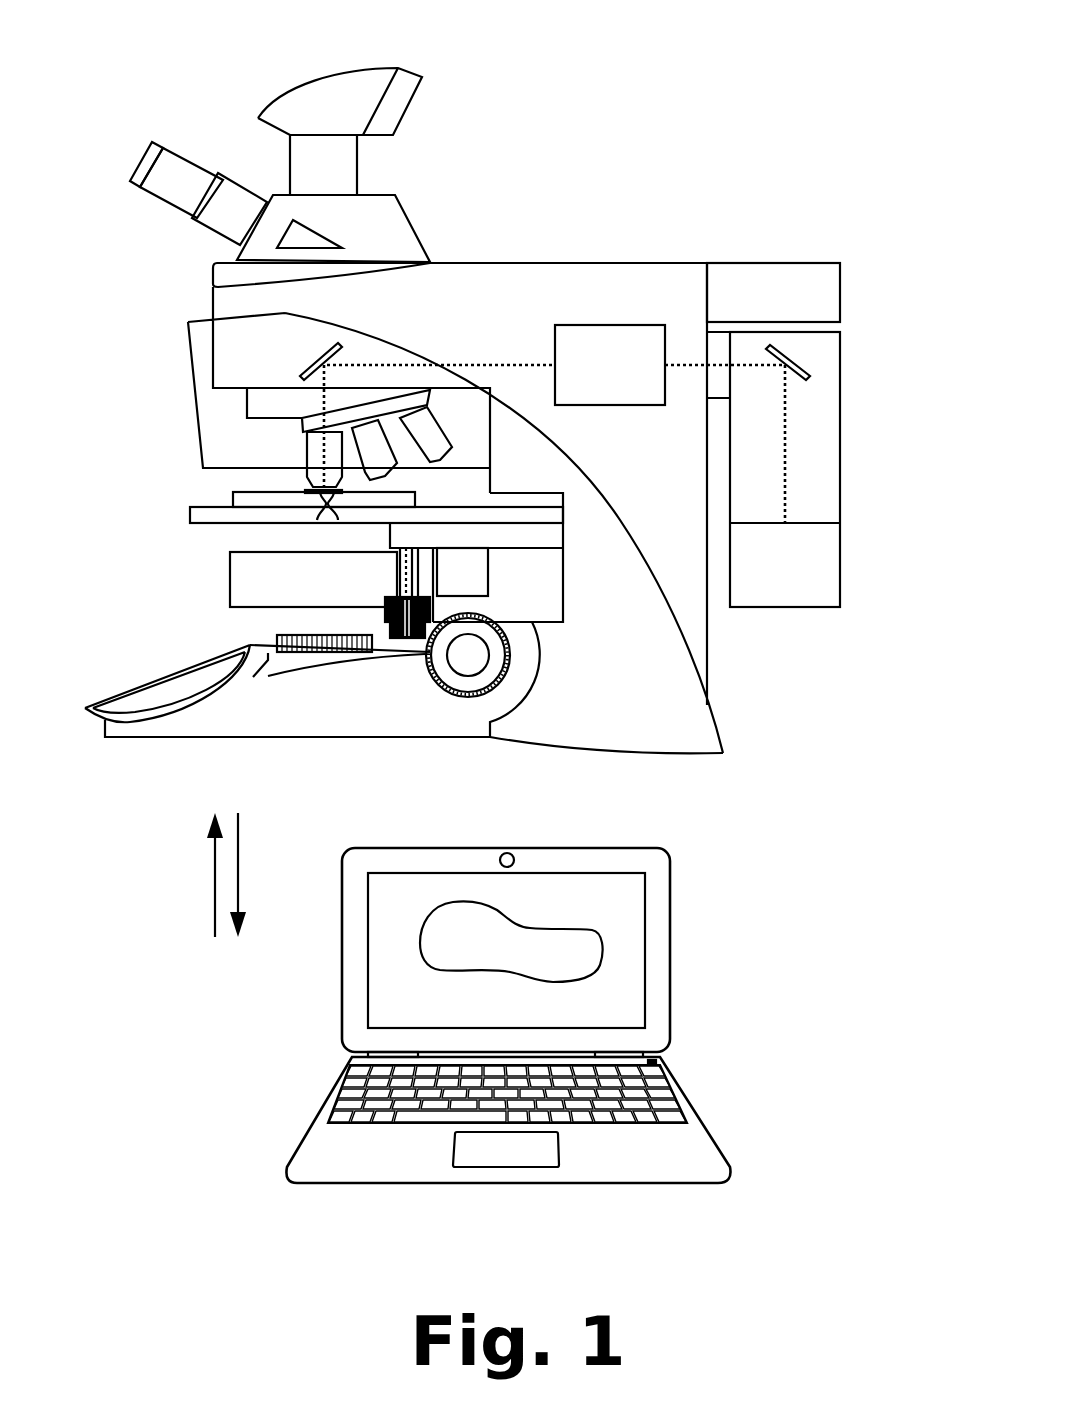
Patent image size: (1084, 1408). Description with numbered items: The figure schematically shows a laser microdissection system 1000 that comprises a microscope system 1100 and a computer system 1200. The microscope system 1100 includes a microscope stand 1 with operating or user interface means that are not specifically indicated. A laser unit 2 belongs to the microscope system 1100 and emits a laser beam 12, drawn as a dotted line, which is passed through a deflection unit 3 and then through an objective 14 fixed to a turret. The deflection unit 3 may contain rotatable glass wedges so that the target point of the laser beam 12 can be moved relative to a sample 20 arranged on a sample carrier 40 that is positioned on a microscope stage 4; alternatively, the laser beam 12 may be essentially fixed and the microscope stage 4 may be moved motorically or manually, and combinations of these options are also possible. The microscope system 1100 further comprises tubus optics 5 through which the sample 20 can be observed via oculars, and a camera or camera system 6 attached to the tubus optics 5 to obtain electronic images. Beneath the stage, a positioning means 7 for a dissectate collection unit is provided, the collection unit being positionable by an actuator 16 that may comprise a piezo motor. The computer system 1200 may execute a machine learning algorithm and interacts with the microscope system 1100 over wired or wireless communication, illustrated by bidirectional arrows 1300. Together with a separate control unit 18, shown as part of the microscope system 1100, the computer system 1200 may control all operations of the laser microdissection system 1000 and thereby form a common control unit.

The laser microdissection system 1000 is at (724, 63).
The microscope system 1100 is at (842, 722).
The microscope stand 1 is at (192, 640).
The camera system 6 is at (328, 72).
The tubus optics 5 is at (428, 205).
The objective 14 is at (307, 458).
The laser beam 12 is at (483, 364).
The deflection unit 3 is at (610, 365).
The control unit 18 is at (773, 292).
The laser unit 2 is at (842, 565).
The microscope stage 4 is at (190, 510).
The sample 20 is at (317, 520).
The sample carrier 40 is at (338, 520).
The positioning means 7 is at (230, 575).
The actuator 16 is at (462, 572).
The bidirectional arrows 1300 is at (180, 876).
The computer system 1200 is at (270, 1020).